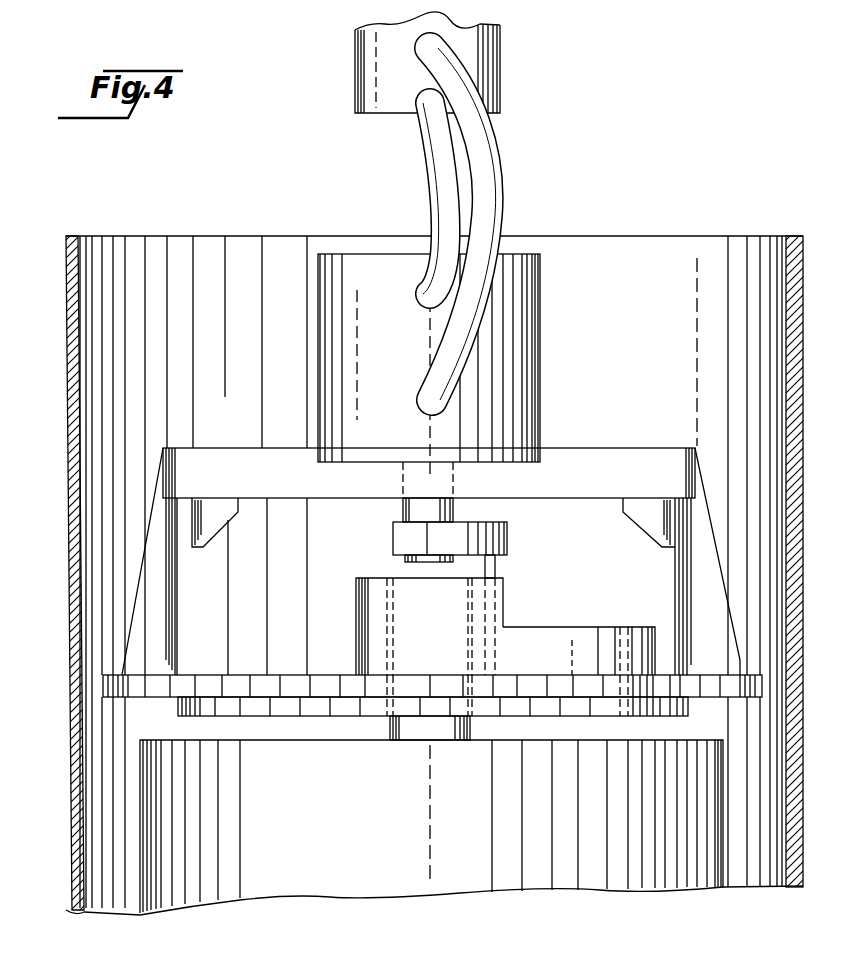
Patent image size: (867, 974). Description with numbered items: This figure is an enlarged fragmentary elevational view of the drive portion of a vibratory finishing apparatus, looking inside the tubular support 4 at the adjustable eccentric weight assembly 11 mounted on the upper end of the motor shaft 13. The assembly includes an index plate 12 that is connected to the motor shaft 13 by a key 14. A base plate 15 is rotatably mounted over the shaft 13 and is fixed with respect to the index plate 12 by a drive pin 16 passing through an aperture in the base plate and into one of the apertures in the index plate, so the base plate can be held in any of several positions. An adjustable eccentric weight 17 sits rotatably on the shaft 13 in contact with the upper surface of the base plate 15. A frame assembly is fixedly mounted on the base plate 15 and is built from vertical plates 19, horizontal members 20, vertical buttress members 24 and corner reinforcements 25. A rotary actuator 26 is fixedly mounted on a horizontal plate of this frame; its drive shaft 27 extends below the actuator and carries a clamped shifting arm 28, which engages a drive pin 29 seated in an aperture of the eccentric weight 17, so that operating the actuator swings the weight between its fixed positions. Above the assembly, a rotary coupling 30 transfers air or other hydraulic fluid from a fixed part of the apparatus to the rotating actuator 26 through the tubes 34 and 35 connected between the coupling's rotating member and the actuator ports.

The tubular support 4 is at (67, 378).
The adjustable eccentric weight assembly 11 is at (503, 607).
The index plate 12 is at (320, 708).
The motor shaft 13 is at (472, 730).
The key 14 is at (392, 697).
The base plate 15 is at (126, 696).
The drive pin 16 is at (615, 690).
The adjustable eccentric weight 17 is at (568, 627).
The vertical plates 19 is at (183, 605).
The horizontal members 20 is at (222, 448).
The vertical buttress members 24 is at (152, 588).
The corner reinforcements 25 is at (212, 510).
The rotary actuator 26 is at (542, 357).
The drive shaft 27 is at (401, 512).
The shifting arm 28 is at (508, 537).
The drive pin 29 is at (488, 520).
The rotary coupling 30 is at (357, 63).
The tube 34 is at (438, 165).
The tube 35 is at (489, 218).